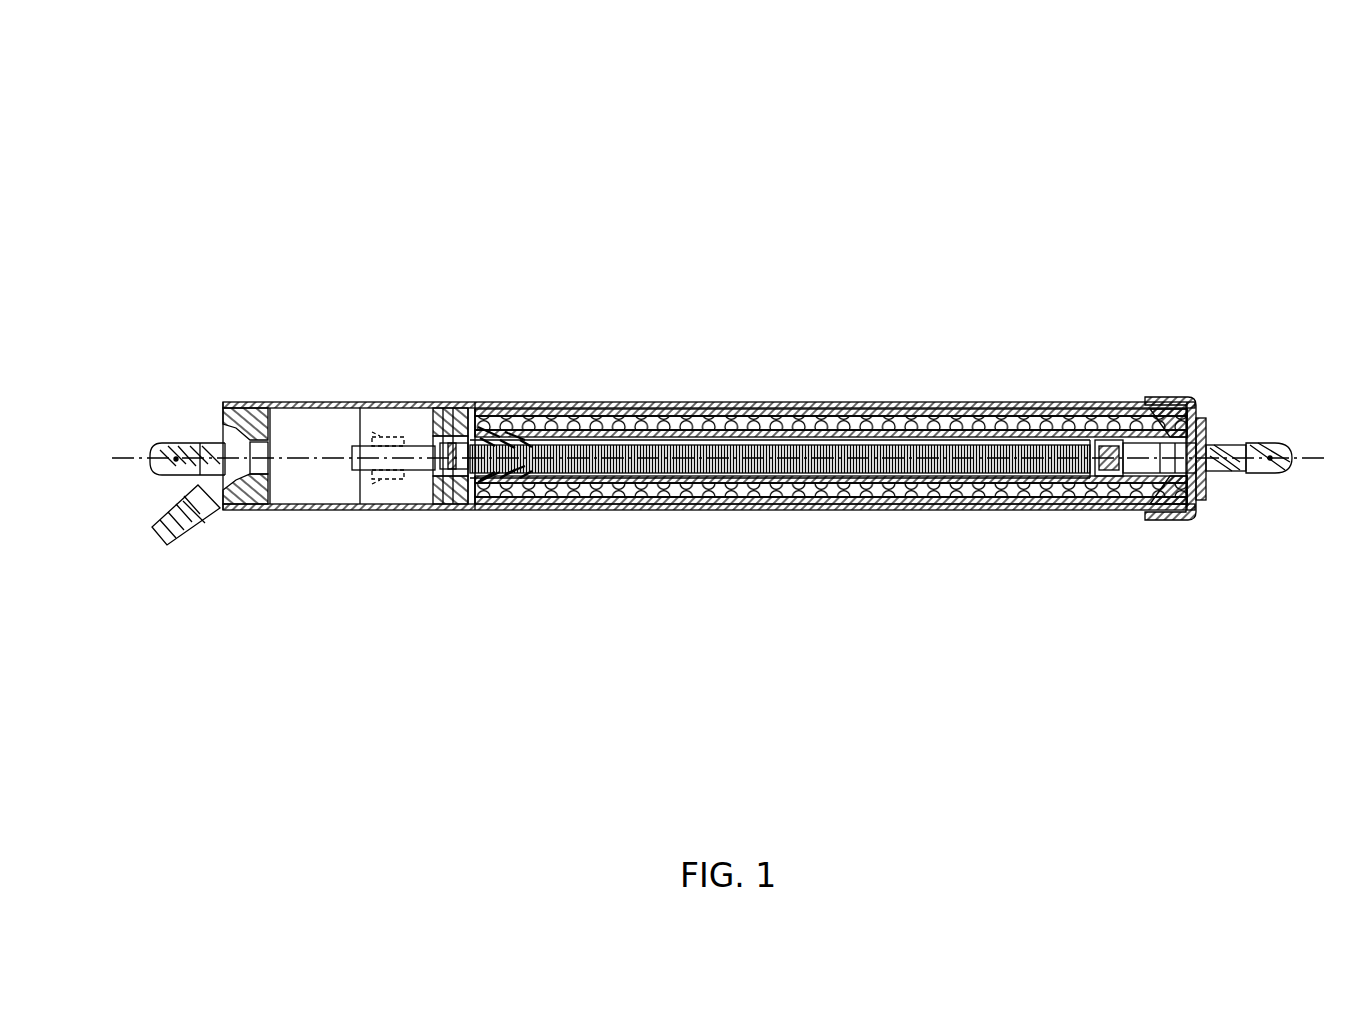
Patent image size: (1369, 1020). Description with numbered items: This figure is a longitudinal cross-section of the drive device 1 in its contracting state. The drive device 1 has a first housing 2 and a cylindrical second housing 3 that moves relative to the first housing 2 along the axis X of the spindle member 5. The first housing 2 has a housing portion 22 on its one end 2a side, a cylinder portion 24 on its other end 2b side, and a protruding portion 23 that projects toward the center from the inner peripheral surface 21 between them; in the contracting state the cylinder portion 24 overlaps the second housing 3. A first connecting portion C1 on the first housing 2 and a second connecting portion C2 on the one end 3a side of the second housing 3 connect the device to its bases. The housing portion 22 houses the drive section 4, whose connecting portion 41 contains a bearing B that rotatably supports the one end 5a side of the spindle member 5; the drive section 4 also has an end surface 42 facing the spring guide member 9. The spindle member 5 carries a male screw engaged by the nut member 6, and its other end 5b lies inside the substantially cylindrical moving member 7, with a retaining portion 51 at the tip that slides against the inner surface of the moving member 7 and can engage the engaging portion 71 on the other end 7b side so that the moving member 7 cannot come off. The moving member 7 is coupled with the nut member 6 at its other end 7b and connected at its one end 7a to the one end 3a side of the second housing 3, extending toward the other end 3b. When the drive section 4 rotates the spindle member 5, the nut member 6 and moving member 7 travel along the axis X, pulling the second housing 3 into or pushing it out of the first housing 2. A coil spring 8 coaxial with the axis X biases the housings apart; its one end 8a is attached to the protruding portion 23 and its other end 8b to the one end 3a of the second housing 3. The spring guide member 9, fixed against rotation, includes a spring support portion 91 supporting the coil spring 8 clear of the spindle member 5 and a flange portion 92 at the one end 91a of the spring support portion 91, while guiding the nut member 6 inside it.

The drive device 1 is at (700, 383).
The first housing 2 is at (695, 401).
The one end of first housing 2a is at (245, 398).
The other end of first housing 2b is at (1142, 396).
The second housing 3 is at (864, 383).
The one end of second housing 3a is at (1197, 396).
The other end of second housing 3b is at (498, 402).
The drive section 4 is at (394, 481).
The connecting portion 41 is at (345, 512).
The end surface 42 is at (438, 402).
The spindle member 5 is at (783, 452).
The one end of spindle member 5a is at (362, 408).
The other end of spindle member 5b is at (1087, 402).
The nut member 6 is at (522, 402).
The moving member 7 is at (833, 434).
The one end of moving member 7a is at (1162, 396).
The other end of moving member 7b is at (548, 512).
The engaging portion 71 is at (550, 402).
The coil spring 8 is at (847, 526).
The one end of coil spring 8a is at (485, 512).
The other end of coil spring 8b is at (1185, 520).
The spring guide member 9 is at (1068, 512).
The spring support portion 91 is at (845, 402).
The one end of spring support portion 91a is at (443, 512).
The flange portion 92 is at (451, 402).
The inner peripheral surface 21 is at (469, 398).
The housing portion 22 is at (385, 512).
The protruding portion 23 is at (452, 512).
The cylinder portion 24 is at (952, 512).
The retaining portion 51 is at (1105, 512).
The bearing B is at (407, 512).
The first connecting portion C1 is at (150, 468).
The second connecting portion C2 is at (1288, 440).
The axis X is at (1303, 462).